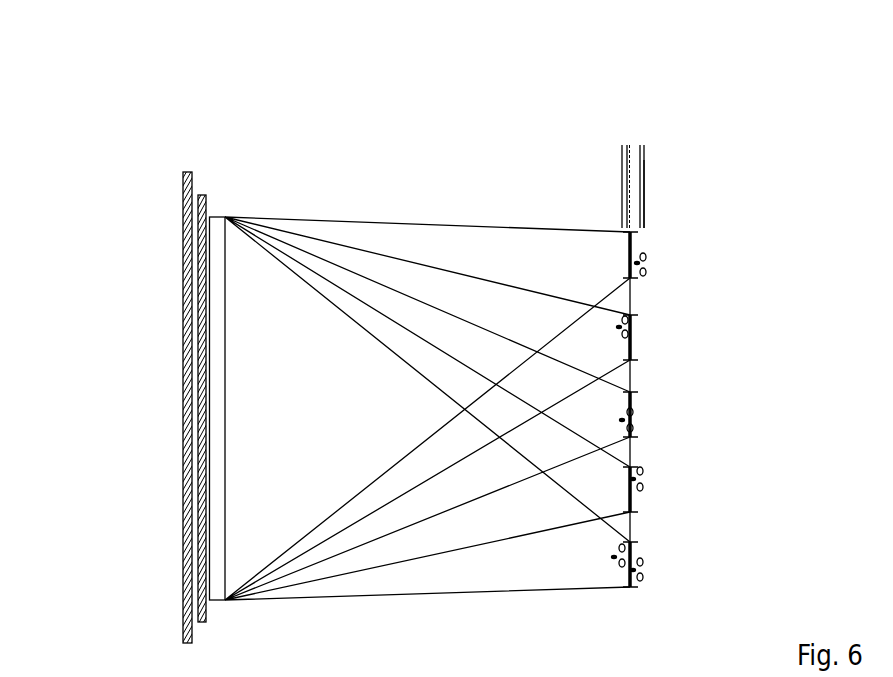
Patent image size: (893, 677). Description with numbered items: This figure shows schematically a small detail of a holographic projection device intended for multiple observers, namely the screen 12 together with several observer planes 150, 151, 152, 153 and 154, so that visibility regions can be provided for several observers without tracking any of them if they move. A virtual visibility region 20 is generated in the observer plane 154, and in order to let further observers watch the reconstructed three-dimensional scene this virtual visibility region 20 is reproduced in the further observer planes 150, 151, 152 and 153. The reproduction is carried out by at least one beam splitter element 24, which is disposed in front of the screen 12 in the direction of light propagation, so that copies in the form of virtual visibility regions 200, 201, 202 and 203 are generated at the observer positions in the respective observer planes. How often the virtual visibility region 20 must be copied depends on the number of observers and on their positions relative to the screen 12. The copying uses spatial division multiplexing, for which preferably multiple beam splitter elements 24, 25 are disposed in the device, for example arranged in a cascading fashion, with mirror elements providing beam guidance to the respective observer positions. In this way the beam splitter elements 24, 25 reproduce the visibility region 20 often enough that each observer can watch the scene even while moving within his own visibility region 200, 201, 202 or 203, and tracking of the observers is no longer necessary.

The screen 12 is at (217, 382).
The beam splitter element 24 is at (202, 523).
The beam splitter element 25 is at (187, 565).
The virtual visibility region 20 is at (665, 252).
The virtual visibility region 200 is at (652, 328).
The virtual visibility region 201 is at (658, 422).
The virtual visibility region 202 is at (662, 487).
The virtual visibility region 203 is at (662, 562).
The observer plane 150 is at (622, 146).
The observer plane 151 is at (625, 145).
The observer plane 152 is at (630, 145).
The observer plane 153 is at (641, 145).
The observer plane 154 is at (645, 146).